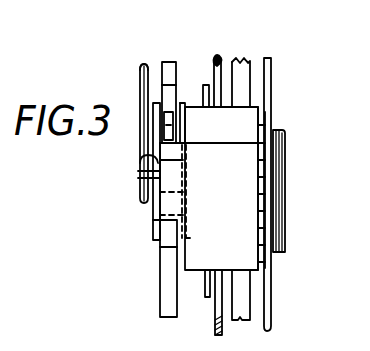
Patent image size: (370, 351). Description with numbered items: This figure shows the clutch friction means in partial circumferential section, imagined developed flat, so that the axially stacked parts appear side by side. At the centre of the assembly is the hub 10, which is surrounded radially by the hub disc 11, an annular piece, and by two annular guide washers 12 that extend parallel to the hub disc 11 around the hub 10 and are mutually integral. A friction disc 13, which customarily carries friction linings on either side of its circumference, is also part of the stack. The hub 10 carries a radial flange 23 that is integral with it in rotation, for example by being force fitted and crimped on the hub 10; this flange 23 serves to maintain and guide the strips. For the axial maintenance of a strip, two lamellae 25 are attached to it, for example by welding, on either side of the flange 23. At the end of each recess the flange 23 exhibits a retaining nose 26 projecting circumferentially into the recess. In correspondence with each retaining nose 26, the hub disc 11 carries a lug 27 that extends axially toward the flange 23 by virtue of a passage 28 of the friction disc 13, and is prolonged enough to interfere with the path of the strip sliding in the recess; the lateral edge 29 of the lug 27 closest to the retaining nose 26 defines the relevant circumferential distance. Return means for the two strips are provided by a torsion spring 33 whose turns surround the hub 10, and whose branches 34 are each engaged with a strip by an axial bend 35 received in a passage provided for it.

The hub 10 is at (284, 180).
The hub disc 11 is at (250, 60).
The annular guide washers 12 is at (274, 85).
The friction disc 13 is at (218, 55).
The flange 23 is at (162, 288).
The lamellae 25 is at (188, 171).
The retaining nose 26 is at (173, 131).
The lug 27 is at (192, 274).
The passage 28 is at (235, 60).
The lateral edge 29 is at (146, 160).
The torsion spring 33 is at (141, 62).
The branches 34 is at (138, 79).
The axial bend 35 is at (143, 183).